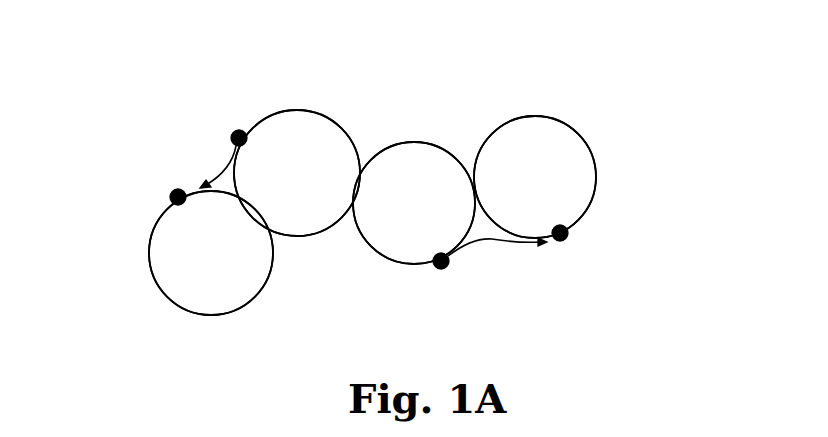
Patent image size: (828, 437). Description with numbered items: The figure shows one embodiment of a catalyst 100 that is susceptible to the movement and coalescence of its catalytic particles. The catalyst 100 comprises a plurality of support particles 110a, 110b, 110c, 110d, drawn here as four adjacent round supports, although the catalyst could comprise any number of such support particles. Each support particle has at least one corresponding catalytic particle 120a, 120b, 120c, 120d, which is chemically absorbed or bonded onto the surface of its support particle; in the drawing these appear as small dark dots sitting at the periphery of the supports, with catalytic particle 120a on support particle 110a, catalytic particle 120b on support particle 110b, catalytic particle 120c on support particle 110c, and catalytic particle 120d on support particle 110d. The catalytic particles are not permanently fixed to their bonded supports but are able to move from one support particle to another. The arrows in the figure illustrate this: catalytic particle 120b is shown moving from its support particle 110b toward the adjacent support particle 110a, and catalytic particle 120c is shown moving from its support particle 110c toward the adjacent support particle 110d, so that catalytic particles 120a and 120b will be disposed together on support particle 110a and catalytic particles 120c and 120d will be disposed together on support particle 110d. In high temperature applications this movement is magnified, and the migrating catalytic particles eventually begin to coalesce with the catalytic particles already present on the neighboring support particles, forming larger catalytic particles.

The catalyst 100 is at (582, 95).
The support particle 110a is at (211, 253).
The support particle 110b is at (297, 173).
The support particle 110c is at (414, 203).
The support particle 110d is at (535, 177).
The catalytic particle 120a is at (171, 198).
The catalytic particle 120b is at (242, 130).
The catalytic particle 120c is at (437, 266).
The catalytic particle 120d is at (568, 232).